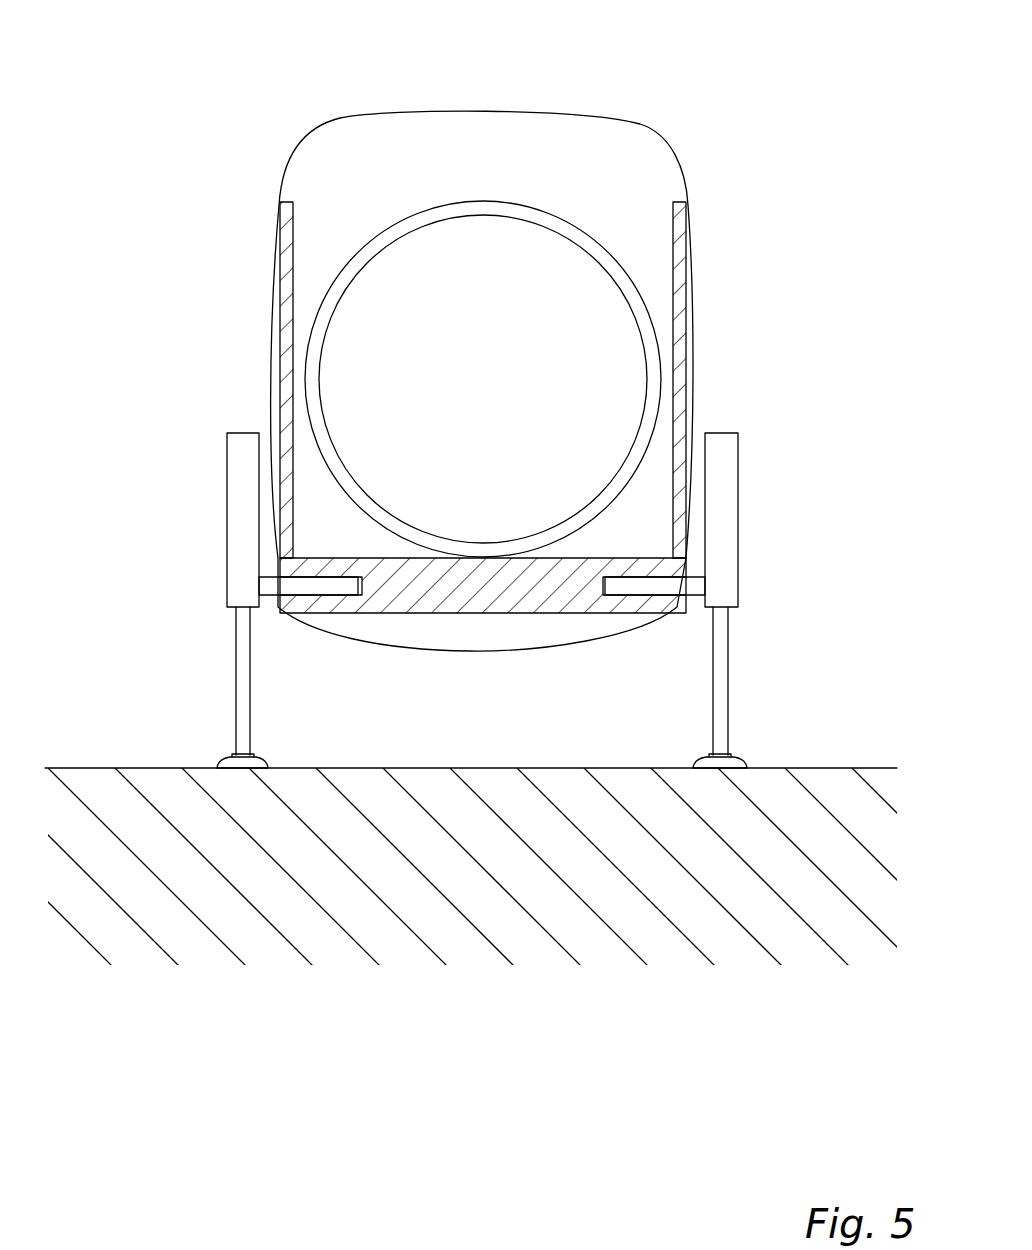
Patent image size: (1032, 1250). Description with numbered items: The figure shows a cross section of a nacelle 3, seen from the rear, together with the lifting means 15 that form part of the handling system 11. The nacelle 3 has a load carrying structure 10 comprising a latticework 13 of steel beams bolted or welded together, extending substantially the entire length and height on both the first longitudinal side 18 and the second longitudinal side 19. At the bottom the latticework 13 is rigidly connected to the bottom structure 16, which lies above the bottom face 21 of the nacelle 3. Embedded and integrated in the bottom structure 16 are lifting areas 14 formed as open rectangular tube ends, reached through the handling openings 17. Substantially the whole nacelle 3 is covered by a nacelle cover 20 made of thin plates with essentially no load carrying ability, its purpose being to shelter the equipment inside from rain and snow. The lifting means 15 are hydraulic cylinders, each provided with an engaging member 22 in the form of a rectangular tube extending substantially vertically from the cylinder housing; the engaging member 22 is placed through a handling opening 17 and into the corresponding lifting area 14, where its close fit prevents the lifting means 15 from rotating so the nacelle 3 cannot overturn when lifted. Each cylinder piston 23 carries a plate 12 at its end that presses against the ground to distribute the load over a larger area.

The handling system 11 is at (252, 81).
The nacelle 3 is at (658, 172).
The nacelle cover 20 is at (578, 112).
The second longitudinal side 19 is at (272, 278).
The first longitudinal side 18 is at (694, 385).
The latticework 13 is at (672, 312).
The load carrying structure 10 is at (386, 598).
The bottom structure 16 is at (542, 596).
The handling openings 17 is at (688, 598).
The lifting area 14 is at (280, 600).
The bottom face 21 is at (482, 652).
The engaging member 22 is at (690, 585).
The lifting means 15 is at (246, 543).
The piston 23 is at (722, 695).
The plate 12 is at (733, 758).